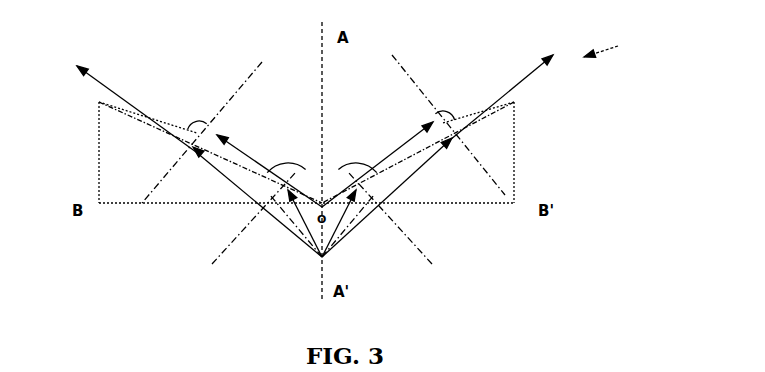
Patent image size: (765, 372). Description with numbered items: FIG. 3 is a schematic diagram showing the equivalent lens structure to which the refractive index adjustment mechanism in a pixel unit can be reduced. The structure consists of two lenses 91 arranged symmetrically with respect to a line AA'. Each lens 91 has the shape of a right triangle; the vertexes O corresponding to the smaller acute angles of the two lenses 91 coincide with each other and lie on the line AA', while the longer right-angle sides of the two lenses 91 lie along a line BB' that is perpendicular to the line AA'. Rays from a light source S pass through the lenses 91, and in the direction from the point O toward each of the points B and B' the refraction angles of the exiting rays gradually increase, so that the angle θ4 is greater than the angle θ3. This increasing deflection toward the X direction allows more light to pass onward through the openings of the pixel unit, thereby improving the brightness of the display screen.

The lens 91 is at (470, 192).
The angle θ 3 is at (322, 163).
The angle θ 4 is at (320, 117).
The light source S is at (606, 47).